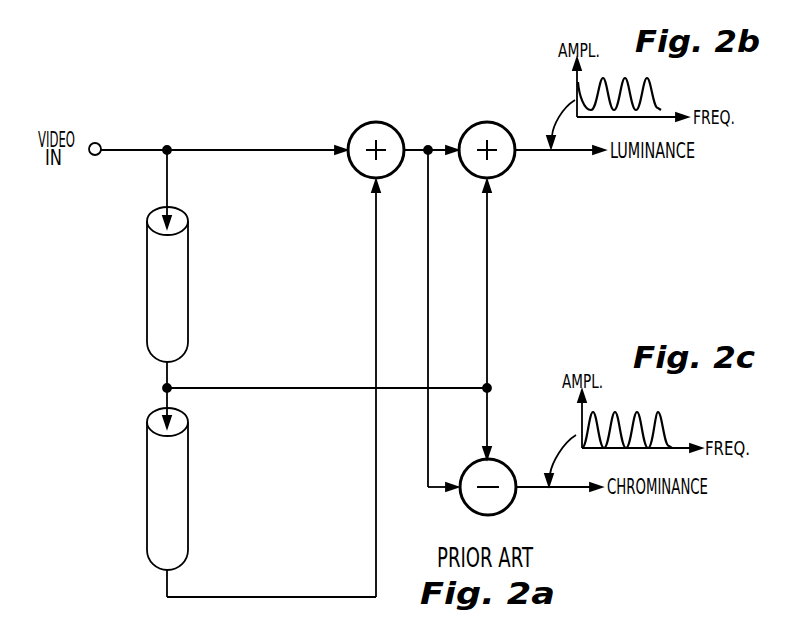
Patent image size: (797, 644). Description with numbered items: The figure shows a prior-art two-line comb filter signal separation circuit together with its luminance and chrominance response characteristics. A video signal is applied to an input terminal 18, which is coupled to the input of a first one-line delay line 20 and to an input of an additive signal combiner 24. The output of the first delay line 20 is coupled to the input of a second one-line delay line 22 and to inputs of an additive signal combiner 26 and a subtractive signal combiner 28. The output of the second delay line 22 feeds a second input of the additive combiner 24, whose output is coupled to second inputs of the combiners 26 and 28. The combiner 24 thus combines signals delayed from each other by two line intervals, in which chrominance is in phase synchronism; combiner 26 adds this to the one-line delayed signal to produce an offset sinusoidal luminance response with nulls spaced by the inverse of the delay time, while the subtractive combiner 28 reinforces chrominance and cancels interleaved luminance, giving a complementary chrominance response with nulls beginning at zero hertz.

The input terminal 18 is at (99, 143).
The 1-H delay line 20 is at (147, 250).
The second 1-H delay line 22 is at (148, 432).
The additive signal combiner 24 is at (397, 110).
The additive signal combiner 26 is at (503, 110).
The subtractive signal combiner 28 is at (505, 460).